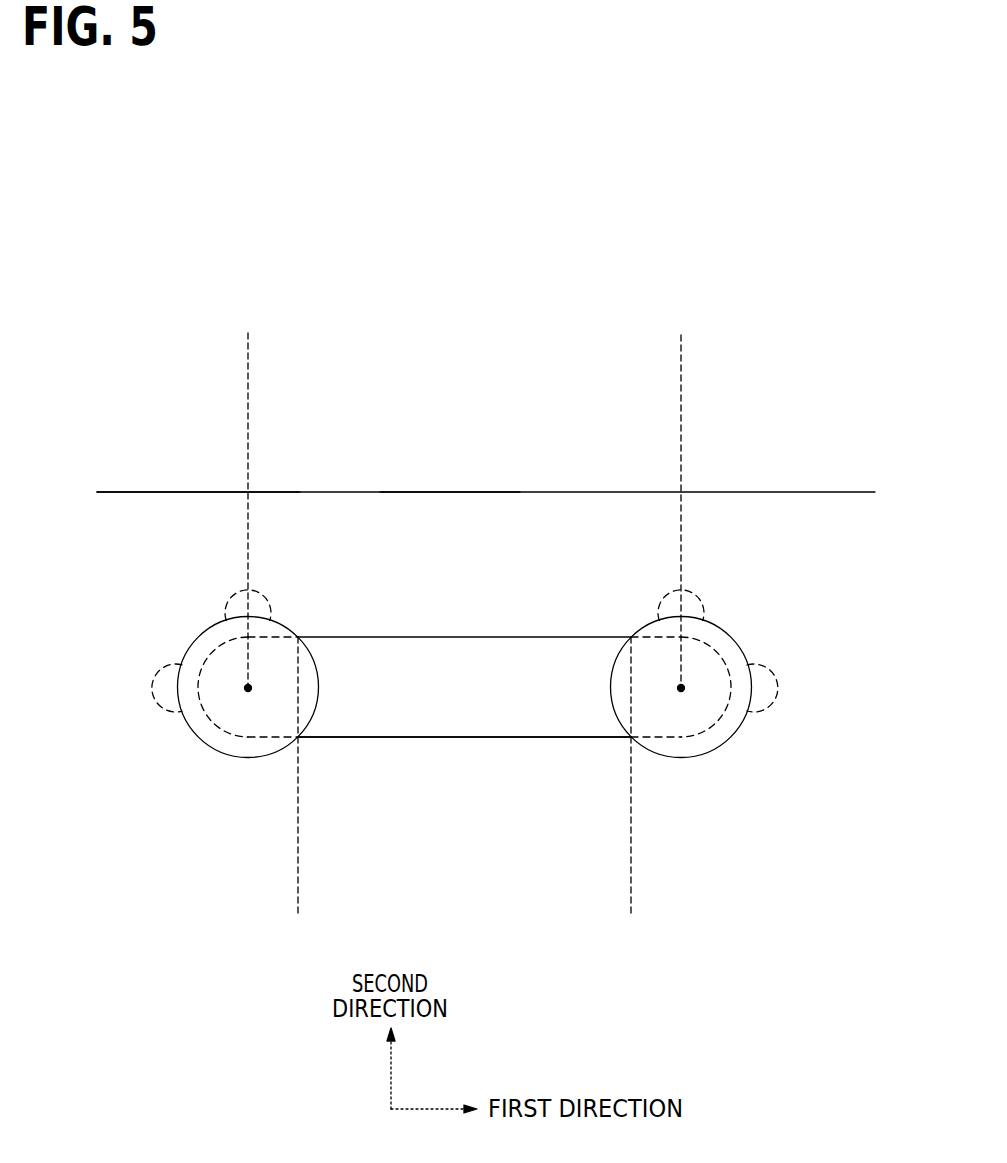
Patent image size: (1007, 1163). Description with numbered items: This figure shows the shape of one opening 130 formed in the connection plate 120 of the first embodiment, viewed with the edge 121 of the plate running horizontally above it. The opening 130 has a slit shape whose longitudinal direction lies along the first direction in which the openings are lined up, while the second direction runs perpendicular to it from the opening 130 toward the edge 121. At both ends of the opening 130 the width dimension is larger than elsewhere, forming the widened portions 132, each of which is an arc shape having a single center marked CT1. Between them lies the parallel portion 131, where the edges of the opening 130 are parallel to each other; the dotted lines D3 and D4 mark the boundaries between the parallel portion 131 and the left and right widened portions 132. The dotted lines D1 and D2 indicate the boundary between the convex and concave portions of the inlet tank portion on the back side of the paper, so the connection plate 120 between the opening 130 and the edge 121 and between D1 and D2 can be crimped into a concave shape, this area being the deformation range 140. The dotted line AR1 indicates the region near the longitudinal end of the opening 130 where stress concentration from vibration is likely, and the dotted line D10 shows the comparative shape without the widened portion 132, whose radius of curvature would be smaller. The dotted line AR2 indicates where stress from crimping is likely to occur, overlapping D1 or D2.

The connection plate 120 is at (177, 518).
The edge 121 is at (515, 492).
The deformation range 140 is at (443, 517).
The opening 130 is at (421, 725).
The parallel portion 131 is at (551, 752).
The widened portion 132 is at (236, 771).
The center of the arc shape CT1 is at (236, 701).
The dotted line D10 is at (212, 648).
The dotted line AR1 is at (162, 675).
The dotted line AR2 is at (237, 603).
The dotted line D1 is at (250, 343).
The dotted line D2 is at (683, 346).
The dotted line D3 is at (300, 893).
The dotted line D4 is at (633, 893).